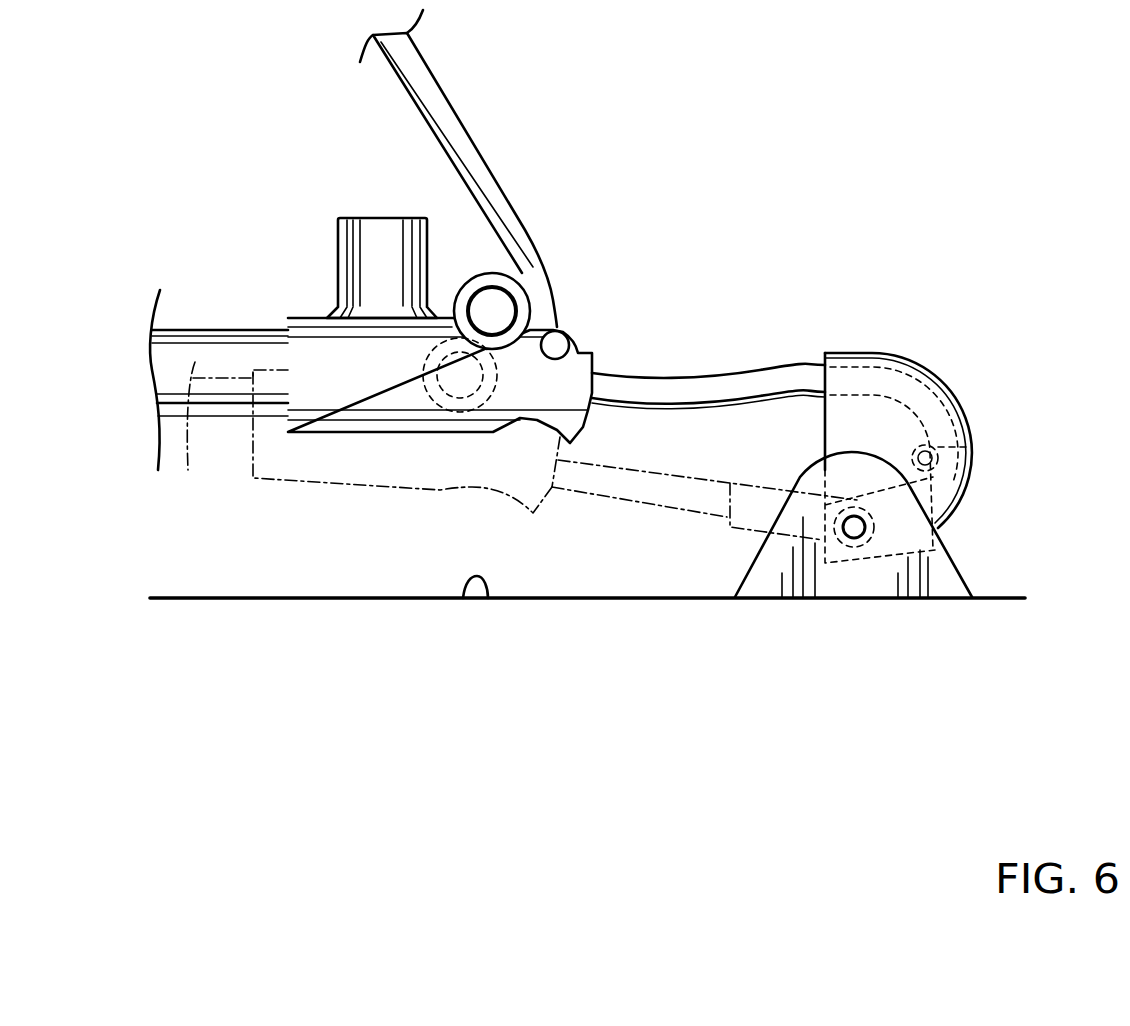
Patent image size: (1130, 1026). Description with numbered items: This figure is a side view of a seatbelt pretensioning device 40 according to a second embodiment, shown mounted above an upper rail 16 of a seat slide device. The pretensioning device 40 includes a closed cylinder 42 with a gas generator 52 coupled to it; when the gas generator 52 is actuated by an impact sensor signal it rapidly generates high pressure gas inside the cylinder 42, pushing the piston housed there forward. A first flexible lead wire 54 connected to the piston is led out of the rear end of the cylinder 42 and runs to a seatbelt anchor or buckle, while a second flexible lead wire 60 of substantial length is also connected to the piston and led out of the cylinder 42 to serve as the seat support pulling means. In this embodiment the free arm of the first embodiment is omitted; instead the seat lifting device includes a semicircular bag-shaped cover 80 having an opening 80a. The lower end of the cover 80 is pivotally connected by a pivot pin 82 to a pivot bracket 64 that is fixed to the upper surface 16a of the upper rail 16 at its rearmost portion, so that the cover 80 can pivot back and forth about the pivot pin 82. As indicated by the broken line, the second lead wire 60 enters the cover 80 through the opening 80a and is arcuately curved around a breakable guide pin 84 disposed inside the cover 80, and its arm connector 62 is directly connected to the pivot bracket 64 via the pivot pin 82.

The upper rail 16 is at (365, 593).
The upper surface of the upper rail 16a is at (488, 600).
The seatbelt pretensioning device 40 is at (237, 248).
The closed cylinder 42 is at (167, 353).
The gas generator 52 is at (364, 250).
The first flexible lead wire 54 is at (443, 120).
The second flexible lead wire 60 is at (652, 390).
The arm connector 62 is at (787, 523).
The pivot bracket 64 is at (765, 575).
The semicircular bag-shaped cover 80 is at (875, 353).
The opening 80a is at (820, 432).
The pivot pin 82 is at (855, 540).
The breakable guide pin 84 is at (975, 445).